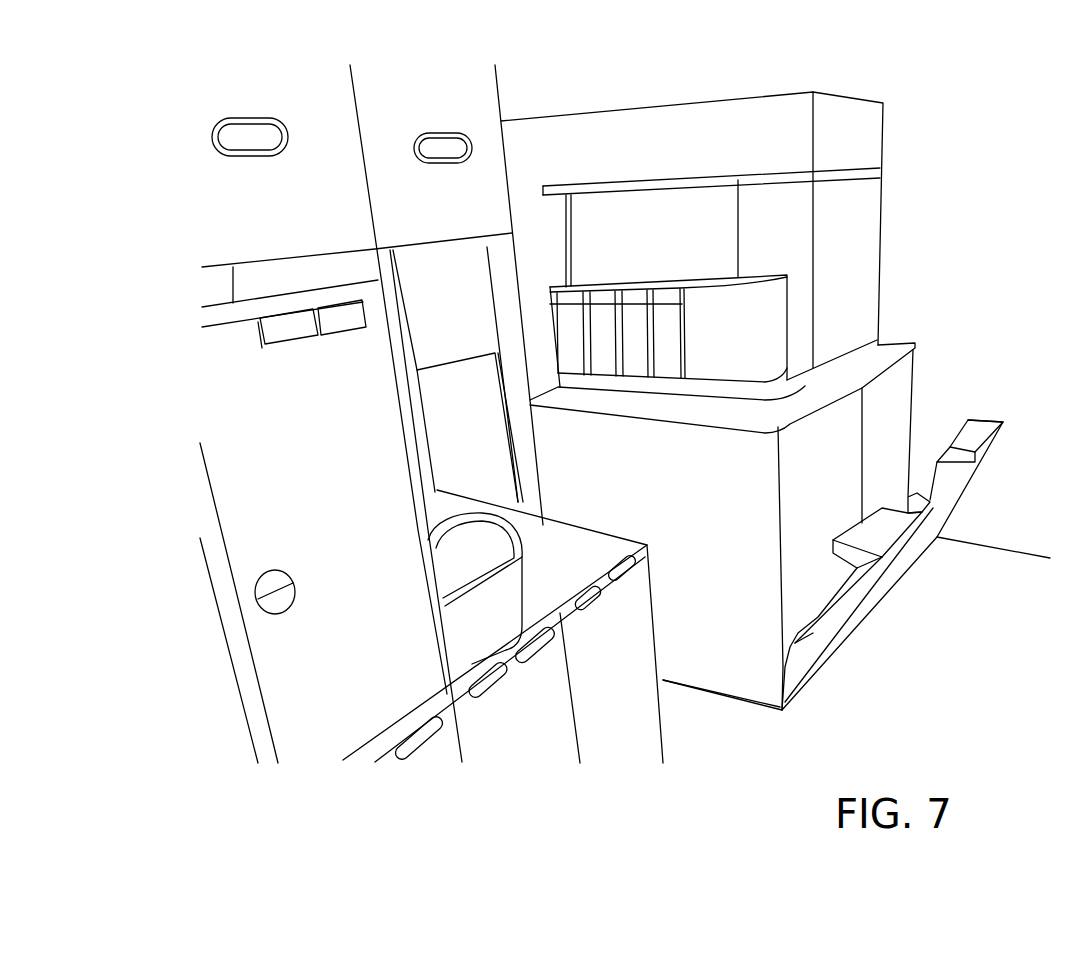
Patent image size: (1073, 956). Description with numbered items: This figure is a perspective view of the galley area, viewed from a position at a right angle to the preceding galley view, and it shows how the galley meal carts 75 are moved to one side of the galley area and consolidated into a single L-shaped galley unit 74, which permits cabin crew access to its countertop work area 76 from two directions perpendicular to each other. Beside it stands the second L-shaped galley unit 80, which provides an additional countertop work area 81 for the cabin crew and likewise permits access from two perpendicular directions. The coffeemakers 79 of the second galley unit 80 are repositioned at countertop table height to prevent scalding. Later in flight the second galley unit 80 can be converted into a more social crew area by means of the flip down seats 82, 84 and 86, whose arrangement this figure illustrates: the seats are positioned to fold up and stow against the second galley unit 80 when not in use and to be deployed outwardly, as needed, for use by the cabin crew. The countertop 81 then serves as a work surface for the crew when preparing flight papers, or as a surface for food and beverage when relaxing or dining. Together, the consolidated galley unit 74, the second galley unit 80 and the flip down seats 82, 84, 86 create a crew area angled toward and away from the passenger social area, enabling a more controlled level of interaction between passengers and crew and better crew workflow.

The "L"-shaped galley unit 74 is at (275, 425).
The galley meal carts 75 is at (642, 715).
The countertop work area 76 is at (577, 560).
The coffeemakers 79 is at (660, 313).
The second "L"-shaped galley unit 80 is at (737, 128).
The countertop work area 81 is at (833, 370).
The flip down seat 82 is at (973, 442).
The flip down seat 84 is at (935, 480).
The flip down seat 86 is at (870, 522).